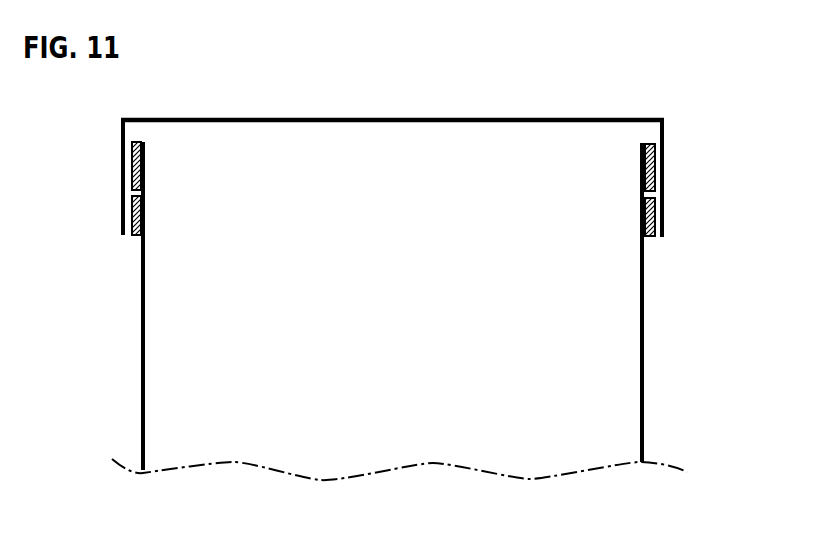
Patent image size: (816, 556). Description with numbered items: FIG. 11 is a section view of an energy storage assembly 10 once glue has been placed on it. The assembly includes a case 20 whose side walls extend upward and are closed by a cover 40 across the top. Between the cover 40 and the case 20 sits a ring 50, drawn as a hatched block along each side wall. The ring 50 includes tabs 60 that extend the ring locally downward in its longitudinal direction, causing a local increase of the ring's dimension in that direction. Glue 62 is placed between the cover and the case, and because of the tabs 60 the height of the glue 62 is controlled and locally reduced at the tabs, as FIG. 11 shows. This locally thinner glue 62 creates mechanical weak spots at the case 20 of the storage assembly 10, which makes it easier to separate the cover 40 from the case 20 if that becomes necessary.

The assembly 10 is at (604, 62).
The side wall 20 is at (139, 362).
The top wall 40 is at (473, 116).
The ring 50 is at (651, 168).
The tabs 60 is at (136, 200).
The glue 62 is at (136, 220).